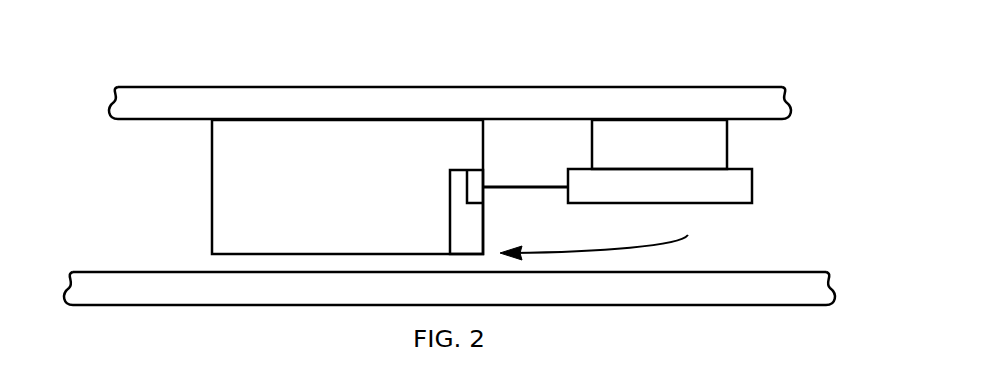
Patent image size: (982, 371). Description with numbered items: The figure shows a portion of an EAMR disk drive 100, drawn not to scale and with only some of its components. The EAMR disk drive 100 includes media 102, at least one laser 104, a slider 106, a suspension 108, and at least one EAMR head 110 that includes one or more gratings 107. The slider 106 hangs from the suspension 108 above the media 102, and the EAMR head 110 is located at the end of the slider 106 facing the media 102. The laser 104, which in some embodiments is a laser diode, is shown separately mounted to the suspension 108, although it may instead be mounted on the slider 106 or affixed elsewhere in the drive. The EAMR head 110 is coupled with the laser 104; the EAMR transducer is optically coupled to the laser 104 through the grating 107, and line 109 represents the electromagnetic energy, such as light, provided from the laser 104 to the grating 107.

The EAMR disk drive 100 is at (471, 46).
The media 102 is at (832, 302).
The laser 104 is at (752, 202).
The slider 106 is at (212, 237).
The grating 107 is at (483, 170).
The suspension 108 is at (147, 85).
The line 109 is at (550, 190).
The EAMR head 110 is at (483, 238).